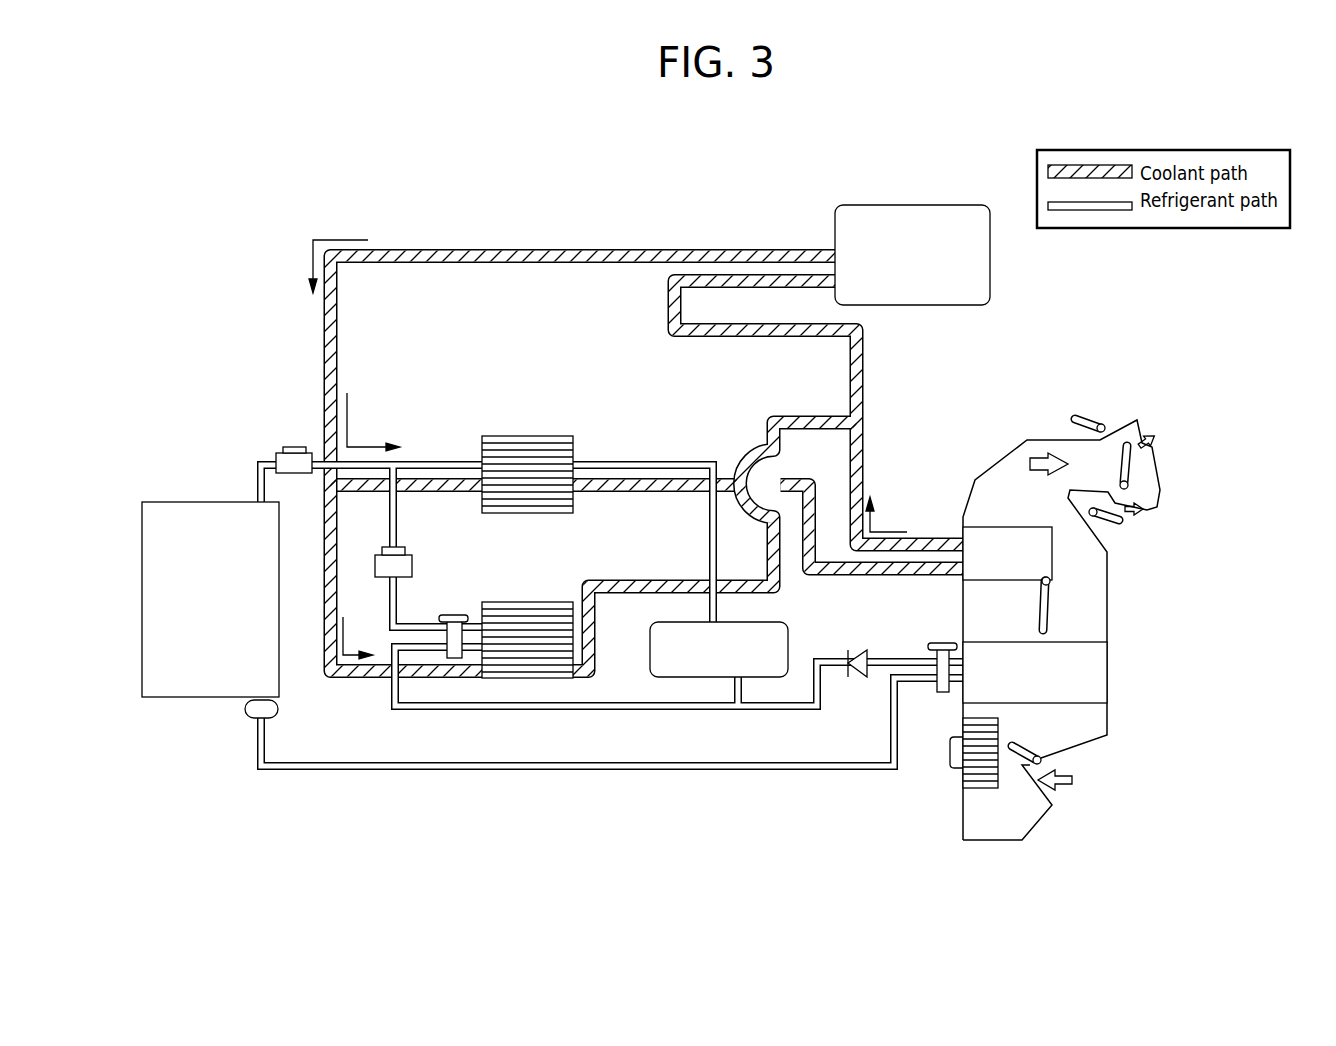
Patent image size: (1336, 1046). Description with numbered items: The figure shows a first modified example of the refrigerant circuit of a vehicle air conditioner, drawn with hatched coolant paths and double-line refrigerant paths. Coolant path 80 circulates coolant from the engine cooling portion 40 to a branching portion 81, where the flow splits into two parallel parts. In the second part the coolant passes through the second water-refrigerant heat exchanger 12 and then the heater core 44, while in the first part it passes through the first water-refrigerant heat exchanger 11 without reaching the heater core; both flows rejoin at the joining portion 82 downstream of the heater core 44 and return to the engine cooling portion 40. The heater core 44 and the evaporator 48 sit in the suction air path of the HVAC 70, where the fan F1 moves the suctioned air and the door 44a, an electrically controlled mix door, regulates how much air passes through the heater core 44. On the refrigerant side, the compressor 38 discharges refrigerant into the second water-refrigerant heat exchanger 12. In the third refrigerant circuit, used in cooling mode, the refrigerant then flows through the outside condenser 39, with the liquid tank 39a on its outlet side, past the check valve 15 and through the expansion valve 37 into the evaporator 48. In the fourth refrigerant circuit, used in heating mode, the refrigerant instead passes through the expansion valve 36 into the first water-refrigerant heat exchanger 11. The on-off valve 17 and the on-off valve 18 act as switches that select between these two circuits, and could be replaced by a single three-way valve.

The first water-refrigerant heat exchanger 11 is at (532, 602).
The second water-refrigerant heat exchanger 12 is at (529, 436).
The check valve 15 is at (867, 650).
The on-off valve 17 is at (293, 447).
The on-off valve 18 is at (413, 564).
The expansion valve 36 is at (454, 615).
The expansion valve 37 is at (944, 643).
The compressor 38 is at (790, 640).
The outside condenser 39 is at (207, 501).
The liquid tank 39a is at (244, 709).
The engine cooling portion 40 is at (915, 205).
The heater core 44 is at (1012, 527).
The door 44a is at (1052, 601).
The evaporator 48 is at (1108, 673).
The HVAC 70 is at (1108, 560).
The coolant path 80 is at (576, 249).
The branching portion 81 is at (326, 490).
The joining portion 82 is at (864, 423).
The fan F1 is at (985, 788).